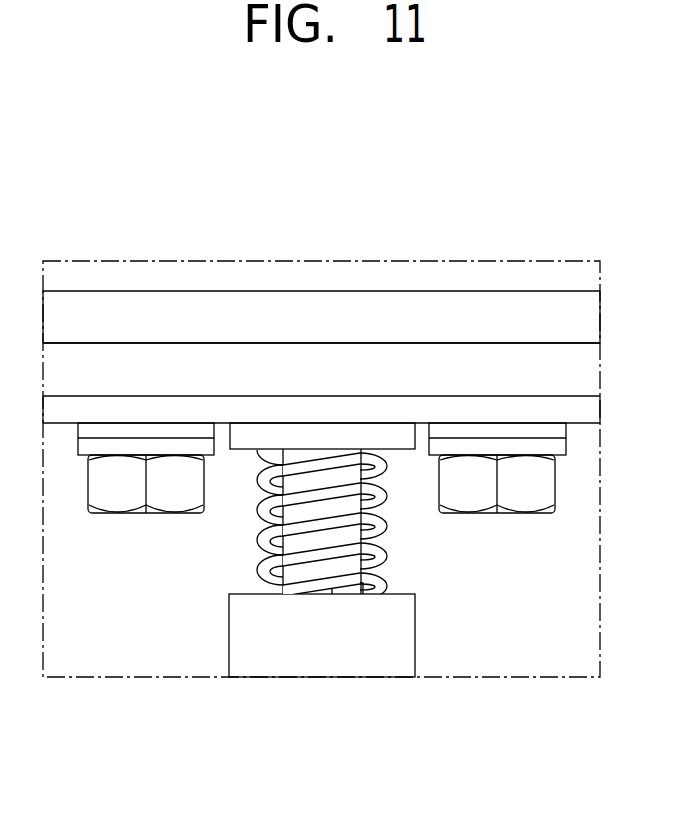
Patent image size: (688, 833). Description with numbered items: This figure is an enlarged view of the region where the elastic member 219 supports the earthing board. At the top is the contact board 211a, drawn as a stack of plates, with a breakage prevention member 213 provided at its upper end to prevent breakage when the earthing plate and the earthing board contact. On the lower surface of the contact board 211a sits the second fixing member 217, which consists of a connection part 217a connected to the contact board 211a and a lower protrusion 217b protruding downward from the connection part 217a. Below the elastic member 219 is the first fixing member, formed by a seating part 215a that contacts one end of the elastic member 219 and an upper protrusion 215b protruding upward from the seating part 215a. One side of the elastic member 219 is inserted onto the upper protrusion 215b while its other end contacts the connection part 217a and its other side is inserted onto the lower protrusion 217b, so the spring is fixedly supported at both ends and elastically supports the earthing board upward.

The contact board 211a is at (502, 357).
The breakage prevention member 213 is at (433, 299).
The seating part 215a is at (370, 660).
The upper protrusion 215b is at (308, 586).
The second fixing member 217 is at (322, 367).
The connection part 217a is at (362, 432).
The lower protrusion 217b is at (298, 458).
The elastic member 219 is at (258, 540).